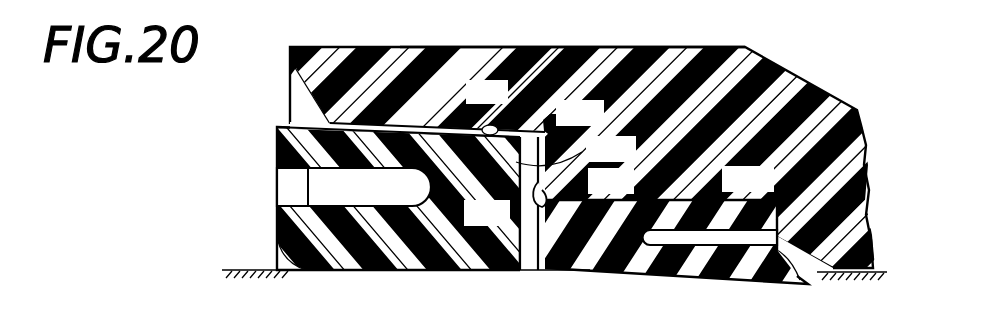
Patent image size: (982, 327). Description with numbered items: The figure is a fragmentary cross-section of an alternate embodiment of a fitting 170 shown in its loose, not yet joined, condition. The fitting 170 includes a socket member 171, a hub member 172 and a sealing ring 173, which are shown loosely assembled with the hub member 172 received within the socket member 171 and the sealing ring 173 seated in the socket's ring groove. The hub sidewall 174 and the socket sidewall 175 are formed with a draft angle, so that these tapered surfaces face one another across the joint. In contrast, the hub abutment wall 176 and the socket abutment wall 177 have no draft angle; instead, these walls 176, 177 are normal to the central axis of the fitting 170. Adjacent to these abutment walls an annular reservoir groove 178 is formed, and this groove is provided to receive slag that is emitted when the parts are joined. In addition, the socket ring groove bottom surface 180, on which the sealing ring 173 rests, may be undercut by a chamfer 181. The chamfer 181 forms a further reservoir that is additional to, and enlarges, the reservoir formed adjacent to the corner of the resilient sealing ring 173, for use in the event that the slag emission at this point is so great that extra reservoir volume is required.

The fitting 170 is at (814, 83).
The socket member 171 is at (657, 46).
The hub member 172 is at (277, 231).
The sealing ring 173 is at (588, 268).
The hub sidewall 174 is at (446, 124).
The socket sidewall 175 is at (485, 125).
The hub abutment wall 176 is at (576, 158).
The socket abutment wall 177 is at (520, 212).
The annular reservoir groove 178 is at (548, 118).
The socket ring groove bottom surface 180 is at (712, 200).
The chamfer 181 is at (552, 194).